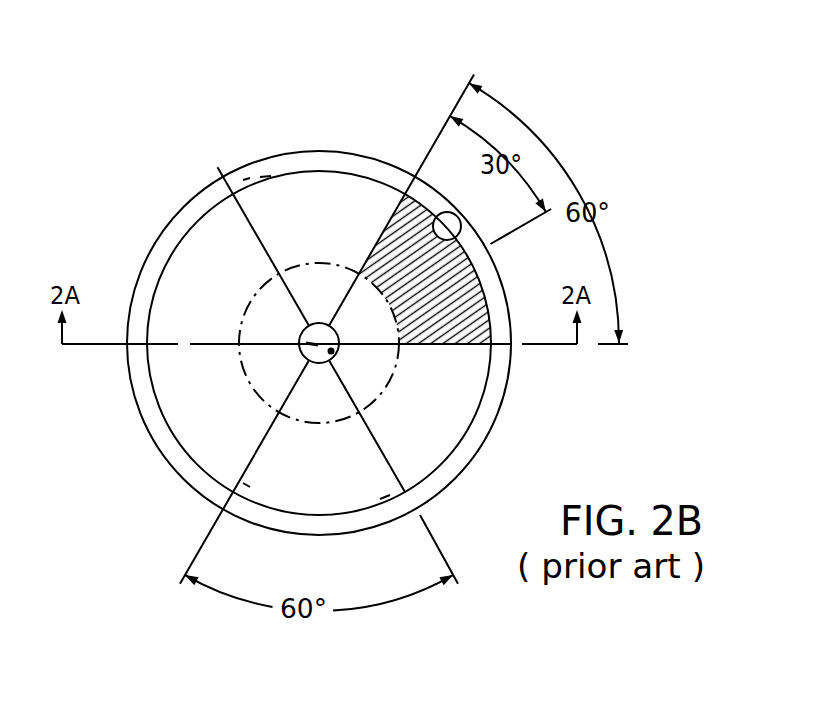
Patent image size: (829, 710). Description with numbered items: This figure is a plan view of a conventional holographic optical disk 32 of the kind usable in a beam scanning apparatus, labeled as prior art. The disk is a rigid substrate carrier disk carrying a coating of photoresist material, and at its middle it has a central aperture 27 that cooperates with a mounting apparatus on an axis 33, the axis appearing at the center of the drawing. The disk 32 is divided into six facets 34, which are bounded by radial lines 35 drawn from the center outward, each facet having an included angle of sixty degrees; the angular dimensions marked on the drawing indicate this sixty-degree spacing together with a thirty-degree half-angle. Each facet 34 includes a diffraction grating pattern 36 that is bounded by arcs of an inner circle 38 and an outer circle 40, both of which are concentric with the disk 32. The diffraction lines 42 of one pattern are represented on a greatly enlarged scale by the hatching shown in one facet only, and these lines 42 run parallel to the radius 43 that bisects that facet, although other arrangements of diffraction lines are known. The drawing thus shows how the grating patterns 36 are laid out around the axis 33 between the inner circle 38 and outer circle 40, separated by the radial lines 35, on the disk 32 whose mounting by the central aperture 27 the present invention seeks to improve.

The holographic optical disk 32 is at (228, 152).
The axis 33 is at (297, 337).
The facet 34 is at (303, 190).
The radial line 35 is at (232, 190).
The diffraction grating pattern 36 is at (457, 284).
The inner circle 38 is at (308, 262).
The outer circle 40 is at (250, 182).
The diffraction lines 42 is at (457, 213).
The radius 43 is at (518, 225).
The central aperture 27 is at (333, 352).